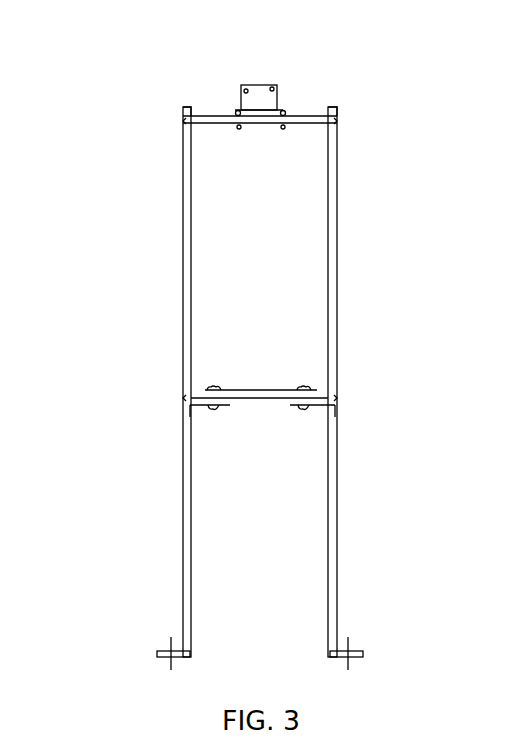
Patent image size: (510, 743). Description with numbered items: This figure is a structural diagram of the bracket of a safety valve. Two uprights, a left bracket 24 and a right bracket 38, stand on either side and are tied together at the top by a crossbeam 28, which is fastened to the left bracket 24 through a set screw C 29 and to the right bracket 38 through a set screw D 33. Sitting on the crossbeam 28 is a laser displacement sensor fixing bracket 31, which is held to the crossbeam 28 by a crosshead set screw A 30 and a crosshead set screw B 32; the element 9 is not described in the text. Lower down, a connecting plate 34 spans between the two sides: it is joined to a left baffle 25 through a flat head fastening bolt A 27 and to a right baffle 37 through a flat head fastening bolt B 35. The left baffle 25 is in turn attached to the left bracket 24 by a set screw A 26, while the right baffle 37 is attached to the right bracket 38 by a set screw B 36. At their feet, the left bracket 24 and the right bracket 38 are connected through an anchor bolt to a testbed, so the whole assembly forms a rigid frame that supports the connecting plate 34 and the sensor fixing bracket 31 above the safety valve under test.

The drive box 9 is at (265, 85).
The left bracket 24 is at (183, 510).
The left baffle 25 is at (183, 424).
The set screw A 26 is at (185, 398).
The flat head fastening bolt A 27 is at (212, 388).
The crossbeam 28 is at (220, 124).
The set screw C 29 is at (183, 121).
The crosshead set screw A 30 is at (238, 113).
The laser displacement sensor fixing bracket 31 is at (242, 85).
The crosshead set screw B 32 is at (285, 112).
The set screw D 33 is at (337, 121).
The connecting plate 34 is at (265, 392).
The flat head fastening bolt B 35 is at (310, 390).
The set screw B 36 is at (337, 398).
The right baffle 37 is at (337, 421).
The right bracket 38 is at (337, 493).